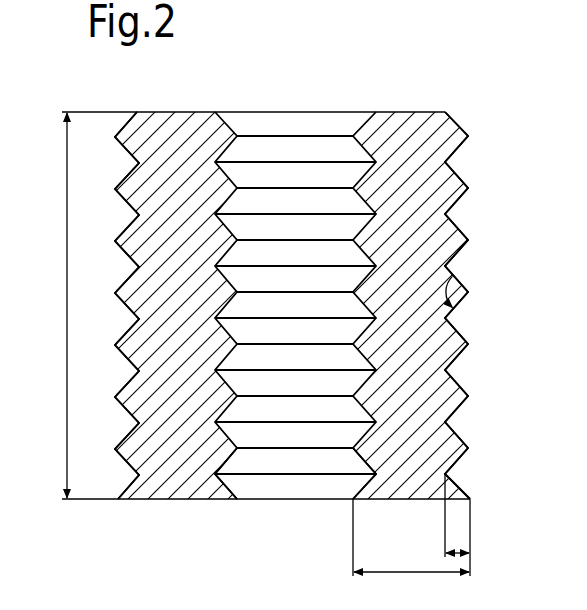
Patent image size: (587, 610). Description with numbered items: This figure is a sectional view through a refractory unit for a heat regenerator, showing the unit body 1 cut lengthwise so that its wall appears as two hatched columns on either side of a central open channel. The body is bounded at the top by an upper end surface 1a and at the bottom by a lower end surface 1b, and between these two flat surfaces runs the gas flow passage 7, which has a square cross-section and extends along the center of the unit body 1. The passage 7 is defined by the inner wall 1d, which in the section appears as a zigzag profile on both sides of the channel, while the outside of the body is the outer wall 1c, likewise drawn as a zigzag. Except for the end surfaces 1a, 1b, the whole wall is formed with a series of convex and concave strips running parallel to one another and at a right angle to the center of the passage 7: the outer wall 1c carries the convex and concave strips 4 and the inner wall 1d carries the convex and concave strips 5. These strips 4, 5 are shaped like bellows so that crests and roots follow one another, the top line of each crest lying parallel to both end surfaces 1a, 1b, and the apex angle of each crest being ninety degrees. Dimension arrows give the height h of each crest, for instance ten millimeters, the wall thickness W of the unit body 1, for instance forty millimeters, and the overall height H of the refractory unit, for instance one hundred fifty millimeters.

The unit body 1 is at (293, 303).
The upper end surface 1a is at (390, 111).
The lower end surface 1b is at (202, 479).
The outer wall 1c is at (119, 207).
The inner wall 1d is at (248, 457).
The convex and concave strips 4 is at (121, 344).
The convex and concave strips 5 is at (243, 133).
The gas flow passage 7 is at (304, 151).
The height H is at (57, 305).
The thickness W is at (411, 537).
The height h is at (457, 515).